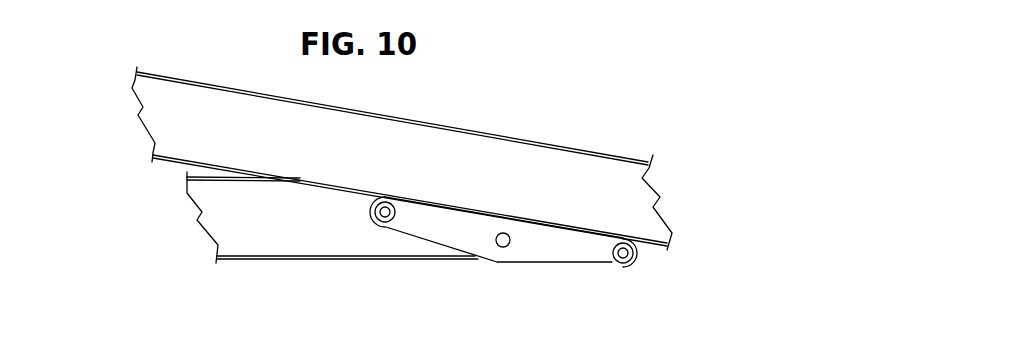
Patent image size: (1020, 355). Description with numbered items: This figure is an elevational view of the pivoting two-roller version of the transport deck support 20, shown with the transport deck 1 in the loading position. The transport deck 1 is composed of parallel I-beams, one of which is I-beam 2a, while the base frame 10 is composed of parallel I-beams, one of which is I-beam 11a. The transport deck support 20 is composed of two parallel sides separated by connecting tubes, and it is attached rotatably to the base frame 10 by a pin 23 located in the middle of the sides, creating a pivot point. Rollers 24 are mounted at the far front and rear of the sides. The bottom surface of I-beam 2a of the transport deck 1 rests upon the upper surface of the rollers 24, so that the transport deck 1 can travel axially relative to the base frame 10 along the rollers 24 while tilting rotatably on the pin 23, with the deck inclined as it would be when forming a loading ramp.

The transport deck 1 is at (128, 107).
The I-beam 2a is at (187, 85).
The base frame 10 is at (183, 230).
The I-beam 11a is at (250, 250).
The transport deck support 20 is at (452, 240).
The pin 23 is at (503, 247).
The roller 24 is at (620, 265).